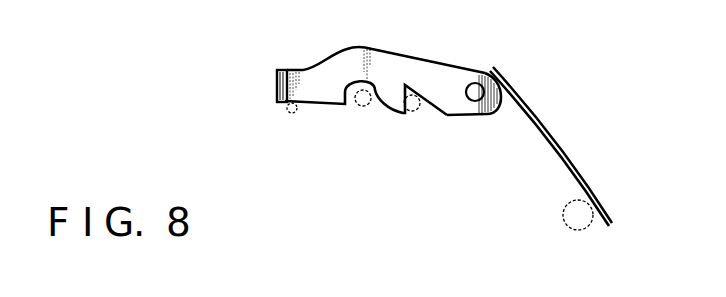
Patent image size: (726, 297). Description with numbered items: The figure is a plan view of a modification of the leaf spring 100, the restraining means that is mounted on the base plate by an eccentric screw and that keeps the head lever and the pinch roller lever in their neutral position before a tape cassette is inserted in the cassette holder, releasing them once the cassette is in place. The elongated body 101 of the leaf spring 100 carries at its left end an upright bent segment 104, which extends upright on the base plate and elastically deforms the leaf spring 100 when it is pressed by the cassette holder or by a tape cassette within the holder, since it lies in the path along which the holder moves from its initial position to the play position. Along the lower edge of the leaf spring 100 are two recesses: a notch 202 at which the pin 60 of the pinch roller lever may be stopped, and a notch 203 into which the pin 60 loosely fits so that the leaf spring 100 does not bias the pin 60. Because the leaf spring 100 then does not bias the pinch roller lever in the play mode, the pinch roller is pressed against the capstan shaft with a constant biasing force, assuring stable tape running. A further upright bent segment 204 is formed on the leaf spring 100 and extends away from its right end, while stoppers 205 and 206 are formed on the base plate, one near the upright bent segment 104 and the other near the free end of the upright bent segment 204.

The leaf spring 100 is at (467, 72).
The lever body 101 is at (318, 104).
The upright bent segment 104 is at (277, 82).
The notch 202 is at (424, 103).
The notch 203 is at (378, 100).
The upright bent segment 204 is at (549, 137).
The stopper 205 is at (287, 111).
The stopper 206 is at (582, 224).
The pin 60 is at (360, 107).